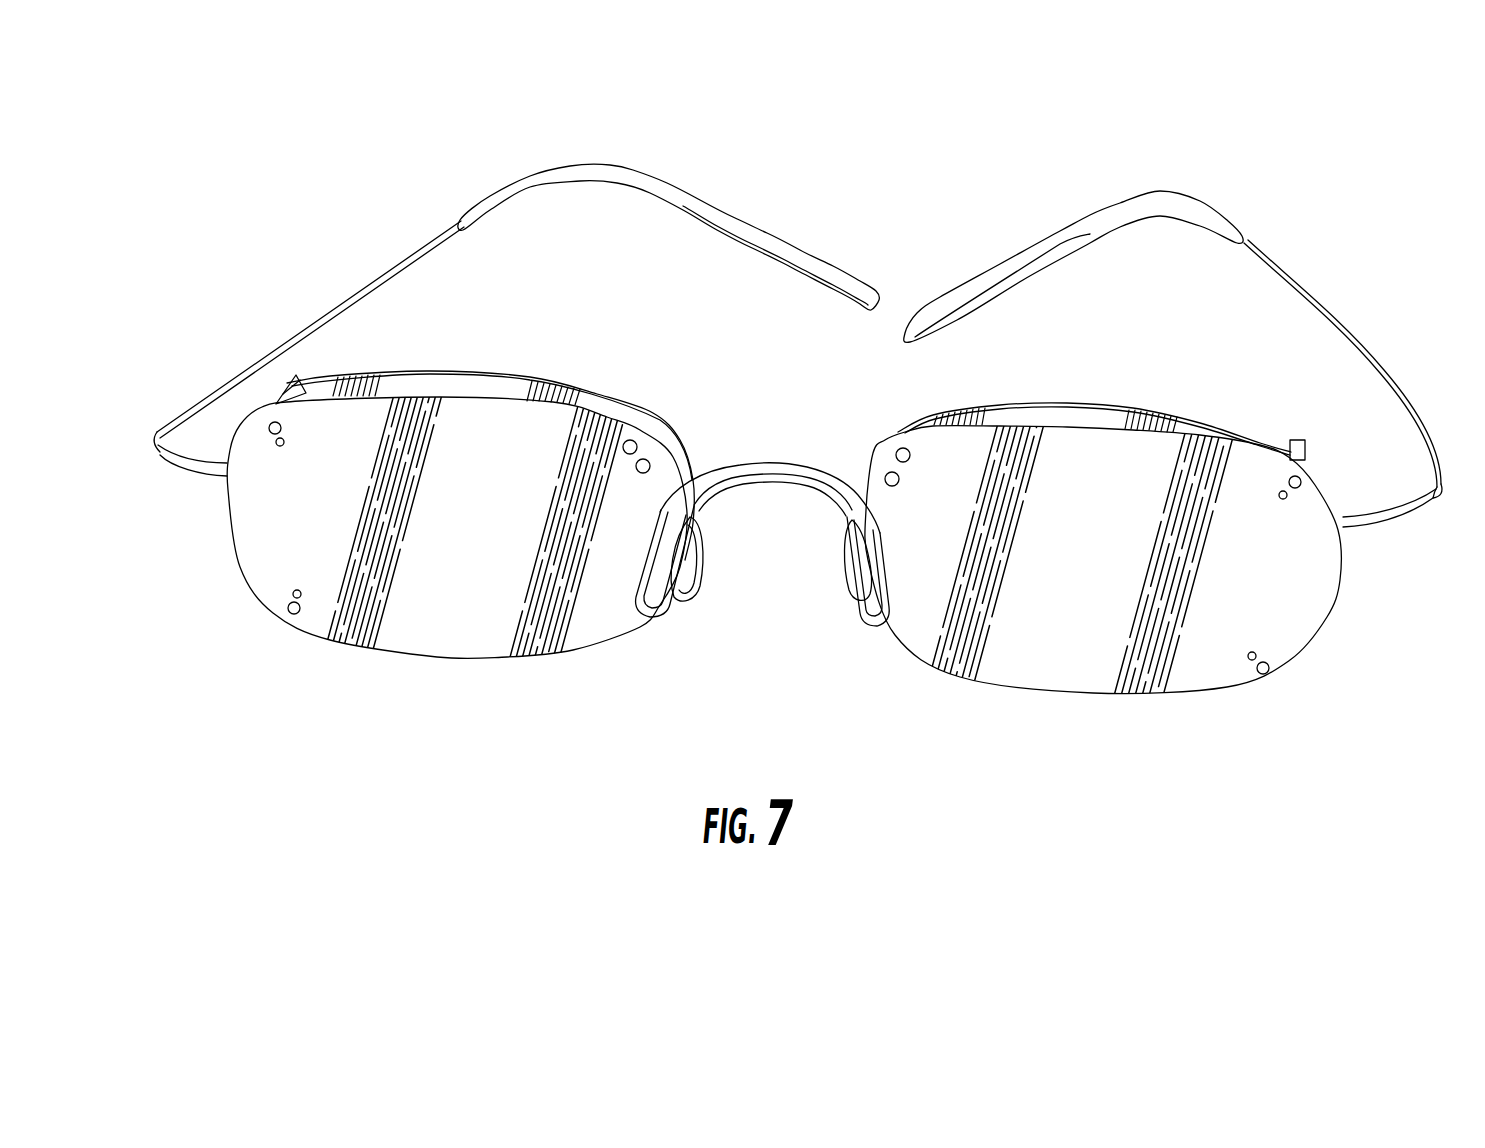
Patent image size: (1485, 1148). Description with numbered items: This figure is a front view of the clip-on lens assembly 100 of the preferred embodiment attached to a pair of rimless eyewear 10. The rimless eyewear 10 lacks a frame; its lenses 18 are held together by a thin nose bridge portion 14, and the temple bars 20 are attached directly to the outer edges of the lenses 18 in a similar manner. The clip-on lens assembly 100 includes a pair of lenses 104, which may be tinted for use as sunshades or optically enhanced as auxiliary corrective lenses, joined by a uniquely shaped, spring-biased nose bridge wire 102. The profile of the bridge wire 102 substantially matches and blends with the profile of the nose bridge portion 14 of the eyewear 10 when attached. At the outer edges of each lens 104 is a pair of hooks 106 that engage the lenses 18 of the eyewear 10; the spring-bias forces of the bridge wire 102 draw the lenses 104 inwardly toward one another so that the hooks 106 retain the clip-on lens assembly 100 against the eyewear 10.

The rimless eyewear 10 is at (641, 401).
The nose bridge portion 14 is at (786, 484).
The lenses 18 is at (502, 382).
The temple bars 20 is at (218, 373).
The clip-on lens assembly 100 is at (437, 653).
The nose bridge wire 102 is at (783, 464).
The lenses 104 is at (267, 585).
The hooks 106 is at (291, 377).